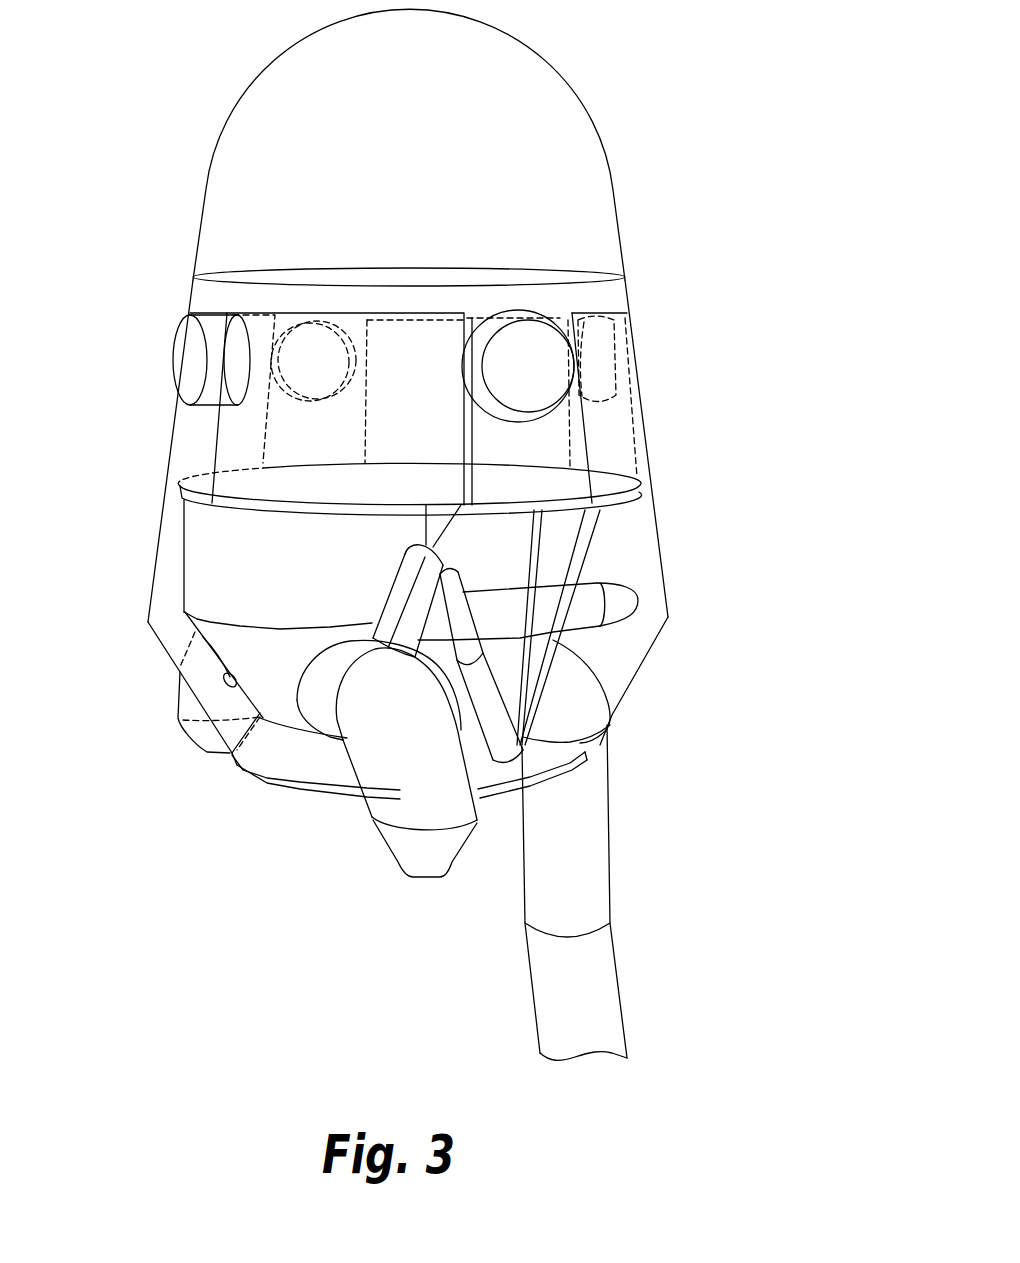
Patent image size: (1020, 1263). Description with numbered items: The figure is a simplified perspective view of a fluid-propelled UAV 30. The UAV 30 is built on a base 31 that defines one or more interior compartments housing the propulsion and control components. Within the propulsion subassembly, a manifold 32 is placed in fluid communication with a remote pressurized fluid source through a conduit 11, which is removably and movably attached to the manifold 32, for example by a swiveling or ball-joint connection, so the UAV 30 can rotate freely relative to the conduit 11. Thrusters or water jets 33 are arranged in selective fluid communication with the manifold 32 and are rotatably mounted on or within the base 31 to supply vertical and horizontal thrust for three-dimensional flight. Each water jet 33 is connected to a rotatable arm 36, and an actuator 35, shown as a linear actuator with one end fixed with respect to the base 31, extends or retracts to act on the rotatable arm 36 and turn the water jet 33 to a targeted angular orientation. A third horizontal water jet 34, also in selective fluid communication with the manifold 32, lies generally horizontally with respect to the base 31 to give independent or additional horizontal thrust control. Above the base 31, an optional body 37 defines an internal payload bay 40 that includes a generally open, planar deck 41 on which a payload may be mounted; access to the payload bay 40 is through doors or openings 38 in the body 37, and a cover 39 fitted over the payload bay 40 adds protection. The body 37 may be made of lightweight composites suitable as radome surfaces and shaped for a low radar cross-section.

The conduit 11 is at (595, 887).
The UAV 30 is at (636, 184).
The base 31 is at (653, 647).
The manifold 32 is at (225, 599).
The water jets 33 is at (203, 732).
The third horizontal water jet 34 is at (618, 608).
The actuator 35 is at (497, 742).
The rotatable arm 36 is at (405, 613).
The body 37 is at (628, 298).
The doors or openings 38 is at (622, 423).
The cover 39 is at (568, 88).
The payload bay 40 is at (431, 442).
The planar deck 41 is at (547, 487).